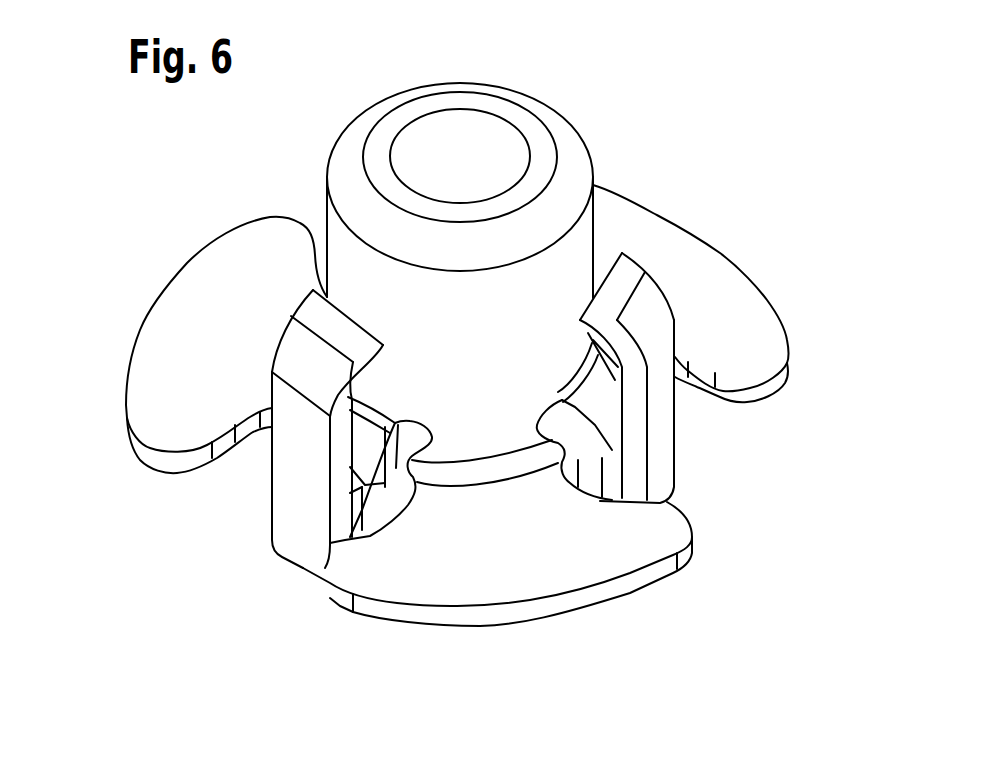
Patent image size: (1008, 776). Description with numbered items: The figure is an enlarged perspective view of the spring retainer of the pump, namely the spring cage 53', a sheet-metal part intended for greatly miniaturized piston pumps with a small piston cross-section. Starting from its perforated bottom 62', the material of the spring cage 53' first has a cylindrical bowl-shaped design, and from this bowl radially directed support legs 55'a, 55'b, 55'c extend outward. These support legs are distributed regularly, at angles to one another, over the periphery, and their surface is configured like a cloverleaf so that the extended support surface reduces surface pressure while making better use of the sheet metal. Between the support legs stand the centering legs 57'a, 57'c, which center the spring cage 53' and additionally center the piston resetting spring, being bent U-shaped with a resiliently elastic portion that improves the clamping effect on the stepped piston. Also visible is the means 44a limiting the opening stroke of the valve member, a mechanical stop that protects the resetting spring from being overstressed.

The spring cage 53' is at (477, 401).
The perforated bottom 62' is at (500, 306).
The support leg 55'b is at (197, 327).
The support leg 55'c is at (740, 293).
The support leg 55'a is at (497, 610).
The centering leg 57'a is at (246, 433).
The centering leg 57'c is at (701, 379).
The means limiting an opening stroke of the valve member 44a is at (415, 467).